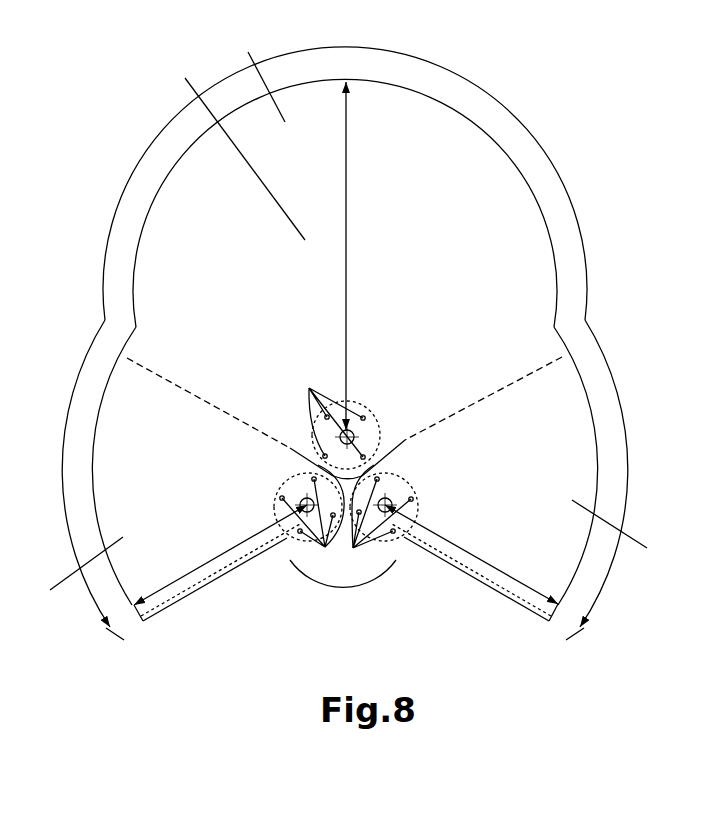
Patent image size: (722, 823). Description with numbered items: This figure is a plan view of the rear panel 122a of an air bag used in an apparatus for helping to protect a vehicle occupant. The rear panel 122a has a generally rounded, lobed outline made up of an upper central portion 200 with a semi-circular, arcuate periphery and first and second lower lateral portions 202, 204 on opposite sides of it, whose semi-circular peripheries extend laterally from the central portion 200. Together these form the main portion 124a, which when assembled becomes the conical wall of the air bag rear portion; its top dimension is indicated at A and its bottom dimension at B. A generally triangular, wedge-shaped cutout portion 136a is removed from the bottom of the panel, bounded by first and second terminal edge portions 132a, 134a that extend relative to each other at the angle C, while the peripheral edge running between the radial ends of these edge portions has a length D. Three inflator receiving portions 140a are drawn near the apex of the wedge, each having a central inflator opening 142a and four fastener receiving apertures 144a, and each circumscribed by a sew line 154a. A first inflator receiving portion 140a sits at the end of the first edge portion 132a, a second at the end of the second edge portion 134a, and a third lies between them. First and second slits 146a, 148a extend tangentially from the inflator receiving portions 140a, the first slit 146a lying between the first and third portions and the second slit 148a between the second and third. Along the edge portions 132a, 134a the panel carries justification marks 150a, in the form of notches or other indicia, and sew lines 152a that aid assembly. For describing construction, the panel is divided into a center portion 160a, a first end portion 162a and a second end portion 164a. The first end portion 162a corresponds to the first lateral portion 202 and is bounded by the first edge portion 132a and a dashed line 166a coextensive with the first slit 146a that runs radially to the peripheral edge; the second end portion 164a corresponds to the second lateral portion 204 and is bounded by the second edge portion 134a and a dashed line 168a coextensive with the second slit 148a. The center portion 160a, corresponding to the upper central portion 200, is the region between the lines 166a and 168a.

The rear panel 122a is at (353, 343).
The main portion 124a is at (231, 147).
The center portion 160a is at (463, 160).
The first end portion 162a is at (110, 503).
The second end portion 164a is at (585, 443).
The dashed line 166a is at (213, 405).
The dashed line 168a is at (495, 393).
The first slit 146a is at (296, 447).
The second slit 148a is at (398, 445).
The inflator receiving portion 140a is at (352, 479).
The central inflator opening 142a is at (353, 432).
The fastener receiving apertures 144a is at (339, 470).
The sew lines 154a is at (363, 418).
The first terminal edge portion 132a is at (213, 580).
The second terminal edge portion 134a is at (483, 585).
The justification marks 150a is at (183, 600).
The sew lines 152a is at (190, 588).
The cutout portion 136a is at (413, 678).
The upper central portion 200 is at (255, 76).
The first lower lateral portion 202 is at (66, 569).
The second lower lateral portion 204 is at (628, 530).
The top dimension A is at (349, 233).
The bottom dimension B is at (214, 578).
The angle C is at (334, 589).
The length D is at (567, 197).